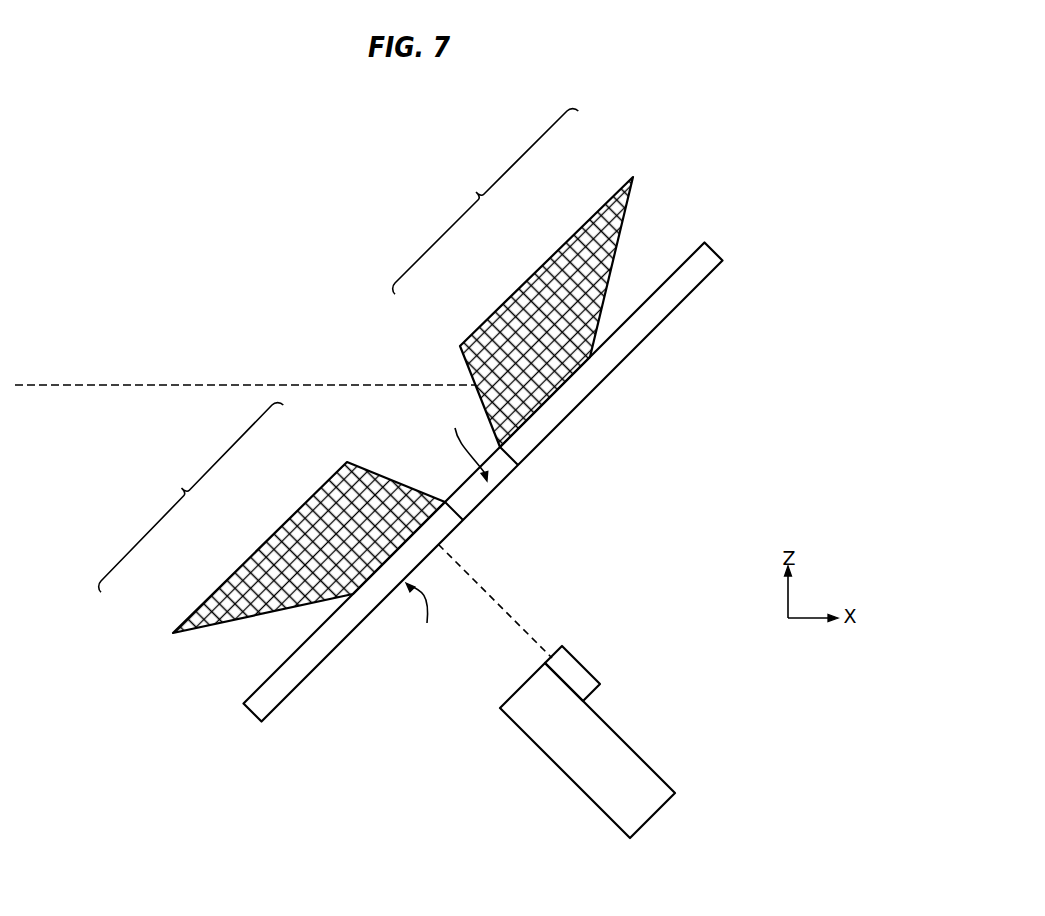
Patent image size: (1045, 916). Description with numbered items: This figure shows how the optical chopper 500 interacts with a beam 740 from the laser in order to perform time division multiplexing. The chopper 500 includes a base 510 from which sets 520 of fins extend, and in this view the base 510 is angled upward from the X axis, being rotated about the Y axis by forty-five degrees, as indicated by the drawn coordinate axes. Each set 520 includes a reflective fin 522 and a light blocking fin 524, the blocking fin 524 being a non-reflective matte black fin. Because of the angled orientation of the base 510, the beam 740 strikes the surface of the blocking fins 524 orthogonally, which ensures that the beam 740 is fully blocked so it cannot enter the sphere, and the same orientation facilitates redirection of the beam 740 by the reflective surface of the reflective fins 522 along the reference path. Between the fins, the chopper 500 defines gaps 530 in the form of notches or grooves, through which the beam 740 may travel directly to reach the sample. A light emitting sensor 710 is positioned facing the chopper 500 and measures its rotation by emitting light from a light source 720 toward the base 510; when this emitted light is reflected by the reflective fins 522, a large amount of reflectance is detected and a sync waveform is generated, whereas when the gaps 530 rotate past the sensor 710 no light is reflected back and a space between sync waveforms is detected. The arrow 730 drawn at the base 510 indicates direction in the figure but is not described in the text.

The optical chopper 500 is at (435, 415).
The base 510 is at (457, 496).
The set of fins 520 is at (339, 351).
The reflective fin 522 is at (686, 257).
The light blocking fin 524 is at (567, 238).
The gap 530 is at (456, 441).
The light emitting sensor 710 is at (655, 775).
The light source 720 is at (574, 668).
The incident direction arrow 730 is at (424, 618).
The beam 740 is at (172, 385).